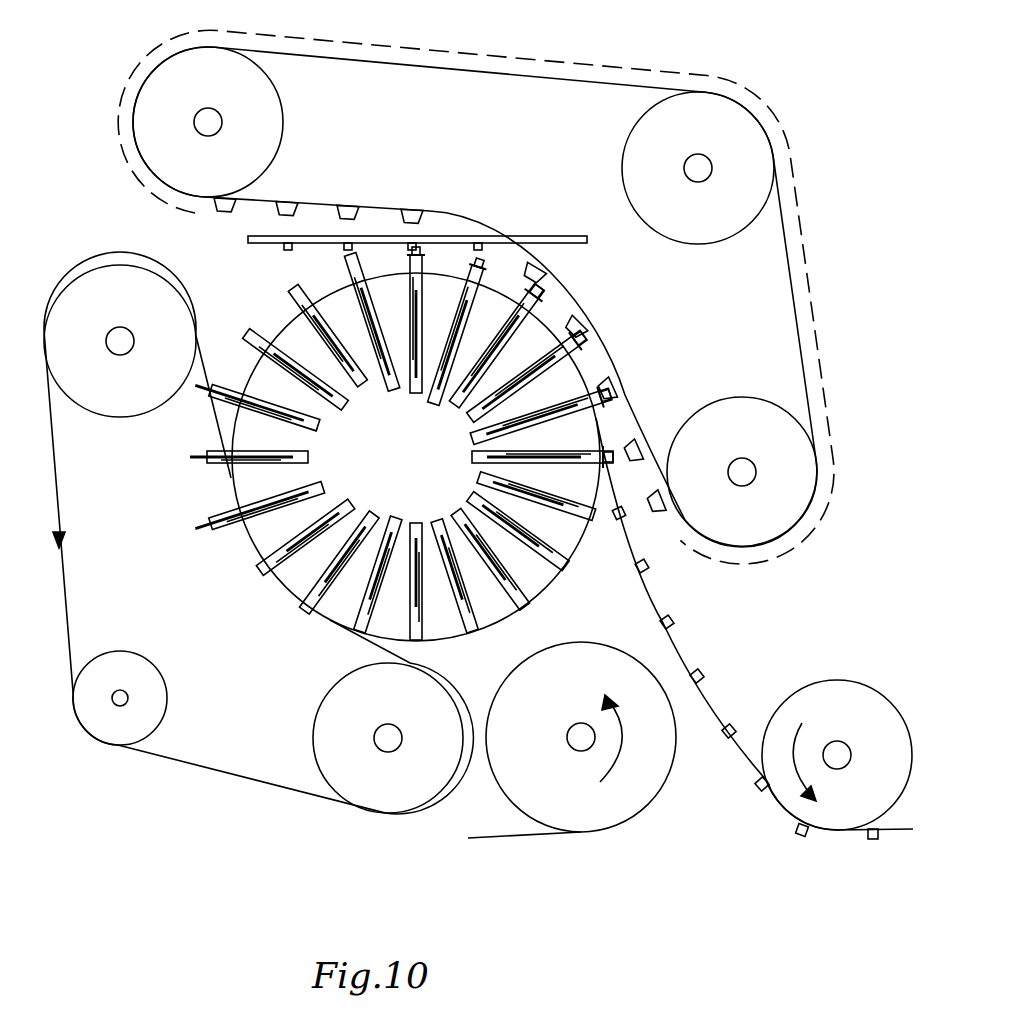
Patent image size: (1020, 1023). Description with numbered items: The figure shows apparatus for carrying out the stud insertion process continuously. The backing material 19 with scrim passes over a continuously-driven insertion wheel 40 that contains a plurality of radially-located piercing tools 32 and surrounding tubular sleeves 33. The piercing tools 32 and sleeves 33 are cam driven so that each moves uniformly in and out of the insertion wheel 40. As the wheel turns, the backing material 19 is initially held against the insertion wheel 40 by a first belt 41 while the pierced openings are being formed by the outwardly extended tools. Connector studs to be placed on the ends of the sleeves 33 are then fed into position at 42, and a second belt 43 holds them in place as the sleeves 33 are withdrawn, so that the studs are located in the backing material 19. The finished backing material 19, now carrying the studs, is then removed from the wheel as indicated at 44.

The backing material 19 is at (527, 659).
The piercing tools 32 is at (202, 460).
The tubular sleeves 33 is at (593, 517).
The insertion wheel 40 is at (290, 335).
The first belt 41 is at (287, 792).
The stud feed position 42 is at (386, 230).
The second belt 43 is at (247, 201).
The backing material removal point 44 is at (683, 641).